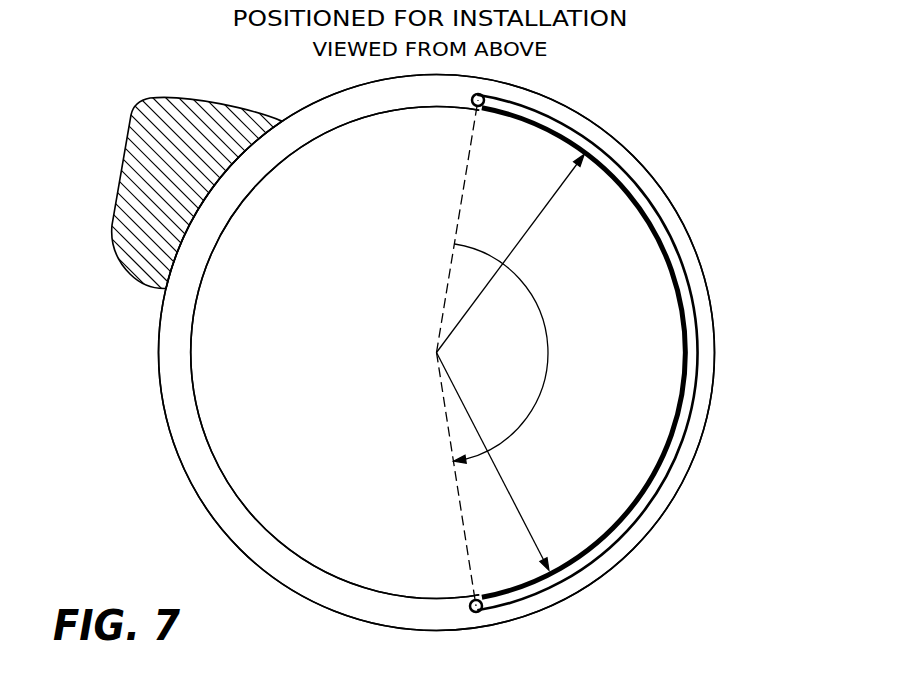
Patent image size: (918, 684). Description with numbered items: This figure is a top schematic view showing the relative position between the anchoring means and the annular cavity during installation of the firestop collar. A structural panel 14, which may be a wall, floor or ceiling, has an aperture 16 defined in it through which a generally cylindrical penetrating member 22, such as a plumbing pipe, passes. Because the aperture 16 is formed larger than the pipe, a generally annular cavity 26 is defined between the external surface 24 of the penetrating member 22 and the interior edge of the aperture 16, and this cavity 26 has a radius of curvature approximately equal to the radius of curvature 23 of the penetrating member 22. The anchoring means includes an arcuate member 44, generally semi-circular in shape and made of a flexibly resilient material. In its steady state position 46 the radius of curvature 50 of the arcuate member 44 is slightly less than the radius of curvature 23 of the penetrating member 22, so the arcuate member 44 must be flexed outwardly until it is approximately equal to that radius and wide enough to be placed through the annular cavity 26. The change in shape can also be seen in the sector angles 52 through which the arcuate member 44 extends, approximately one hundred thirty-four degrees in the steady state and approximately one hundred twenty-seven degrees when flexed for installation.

The structural panel 14 is at (160, 120).
The aperture 16 is at (322, 601).
The penetrating member 22 is at (219, 237).
The radius of curvature of the penetrating member 23 is at (532, 232).
The external surface 24 is at (243, 510).
The cavity 26 is at (180, 413).
The arcuate member 44 is at (628, 520).
The steady state position 46 is at (658, 215).
The radius of curvature of the arcuate member 50 is at (515, 495).
The sector angles 52 is at (546, 358).